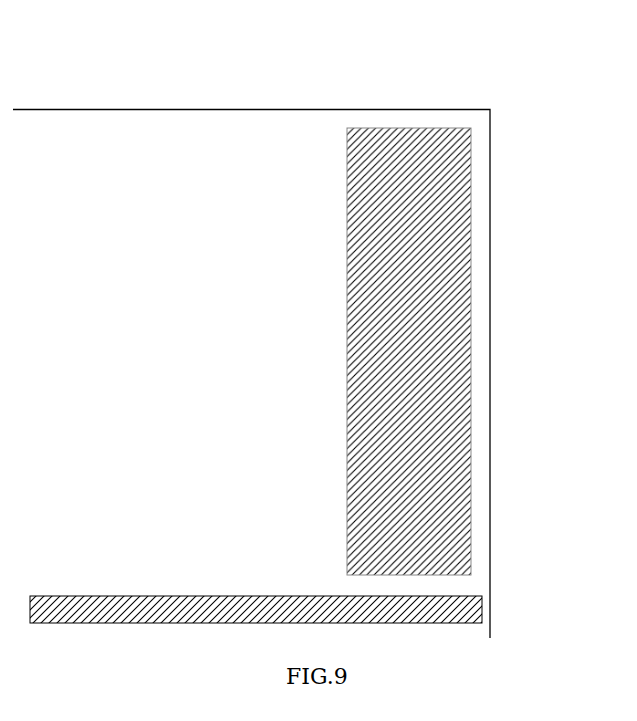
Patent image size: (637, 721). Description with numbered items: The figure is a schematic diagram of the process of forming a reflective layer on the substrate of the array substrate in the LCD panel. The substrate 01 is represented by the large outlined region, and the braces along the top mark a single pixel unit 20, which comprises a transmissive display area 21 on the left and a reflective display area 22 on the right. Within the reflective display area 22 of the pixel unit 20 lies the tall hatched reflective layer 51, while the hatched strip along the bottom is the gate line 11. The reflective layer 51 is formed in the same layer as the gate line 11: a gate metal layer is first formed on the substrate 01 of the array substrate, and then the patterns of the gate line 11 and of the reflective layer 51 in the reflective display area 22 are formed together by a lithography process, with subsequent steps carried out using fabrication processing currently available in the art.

The substrate 01 is at (477, 462).
The gate line 11 is at (430, 606).
The pixel unit 20 is at (482, 52).
The transmissive display area 21 is at (315, 86).
The reflective display area 22 is at (473, 84).
The reflective layer 51 is at (422, 274).